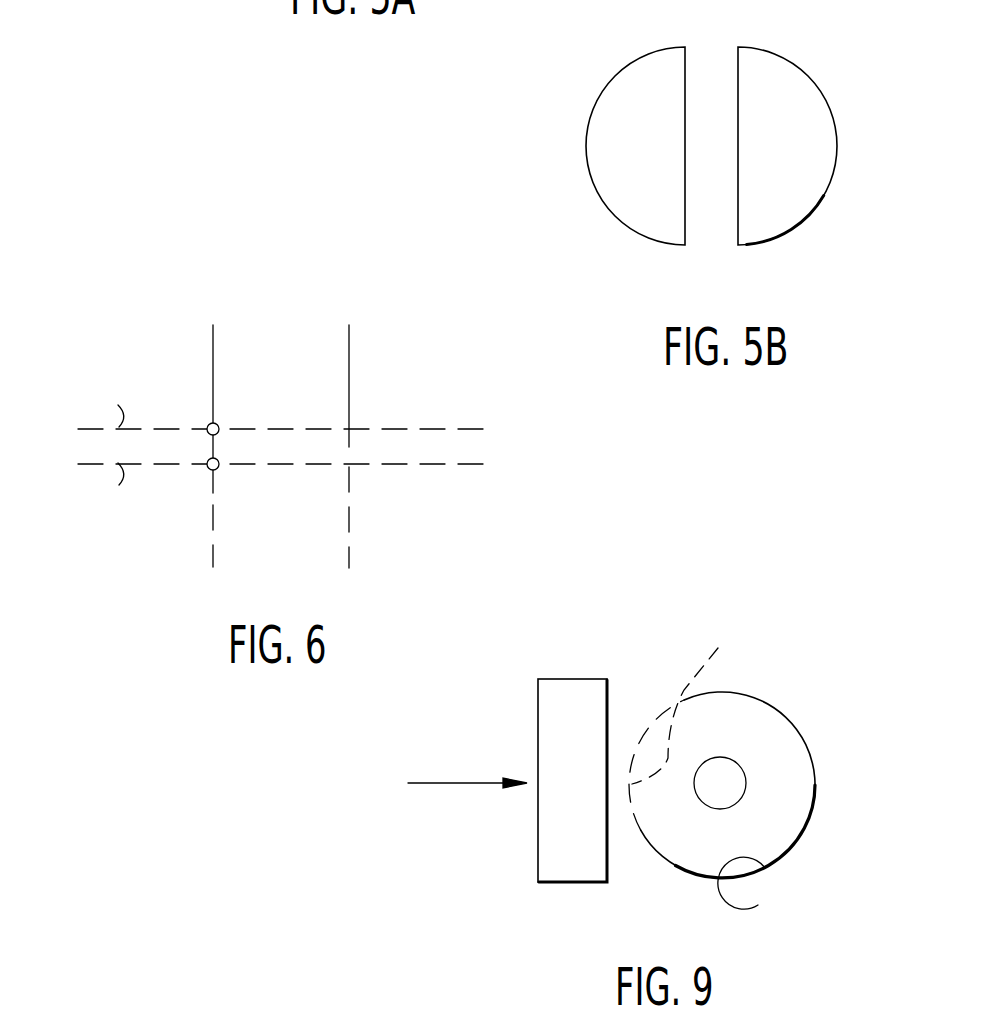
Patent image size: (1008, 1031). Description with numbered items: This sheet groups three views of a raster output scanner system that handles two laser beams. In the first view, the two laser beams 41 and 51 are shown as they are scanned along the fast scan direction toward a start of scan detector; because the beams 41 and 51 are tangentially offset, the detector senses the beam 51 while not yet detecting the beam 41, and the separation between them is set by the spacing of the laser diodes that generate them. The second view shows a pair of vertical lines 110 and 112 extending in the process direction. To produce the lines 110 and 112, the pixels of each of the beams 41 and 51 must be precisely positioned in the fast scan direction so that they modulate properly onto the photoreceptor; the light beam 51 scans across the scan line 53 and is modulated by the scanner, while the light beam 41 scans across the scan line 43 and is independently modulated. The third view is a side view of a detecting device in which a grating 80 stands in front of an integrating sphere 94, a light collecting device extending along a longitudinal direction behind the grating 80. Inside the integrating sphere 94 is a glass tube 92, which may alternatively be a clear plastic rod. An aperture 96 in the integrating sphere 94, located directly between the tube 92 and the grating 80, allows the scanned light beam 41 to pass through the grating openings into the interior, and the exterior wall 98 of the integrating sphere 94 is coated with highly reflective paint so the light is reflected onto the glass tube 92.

In FIG. 5B, the laser beam 41 is at (575, 84).
In FIG. 6, the laser beam 41 is at (209, 424).
In FIG. 9, the laser beam 41 is at (477, 783).
In FIG. 5B, the laser beam 51 is at (711, 206).
In FIG. 6, the laser beam 51 is at (209, 470).
In FIG. 6, the scan line 43 is at (117, 393).
In FIG. 6, the scan line 53 is at (113, 494).
In FIG. 6, the vertical line 110 is at (213, 378).
In FIG. 6, the vertical line 112 is at (349, 380).
In FIG. 9, the grating 80 is at (569, 679).
In FIG. 9, the glass tube 92 is at (732, 760).
In FIG. 9, the integrating sphere 94 is at (812, 783).
In FIG. 9, the aperture 96 is at (691, 707).
In FIG. 9, the exterior wall 98 is at (740, 908).